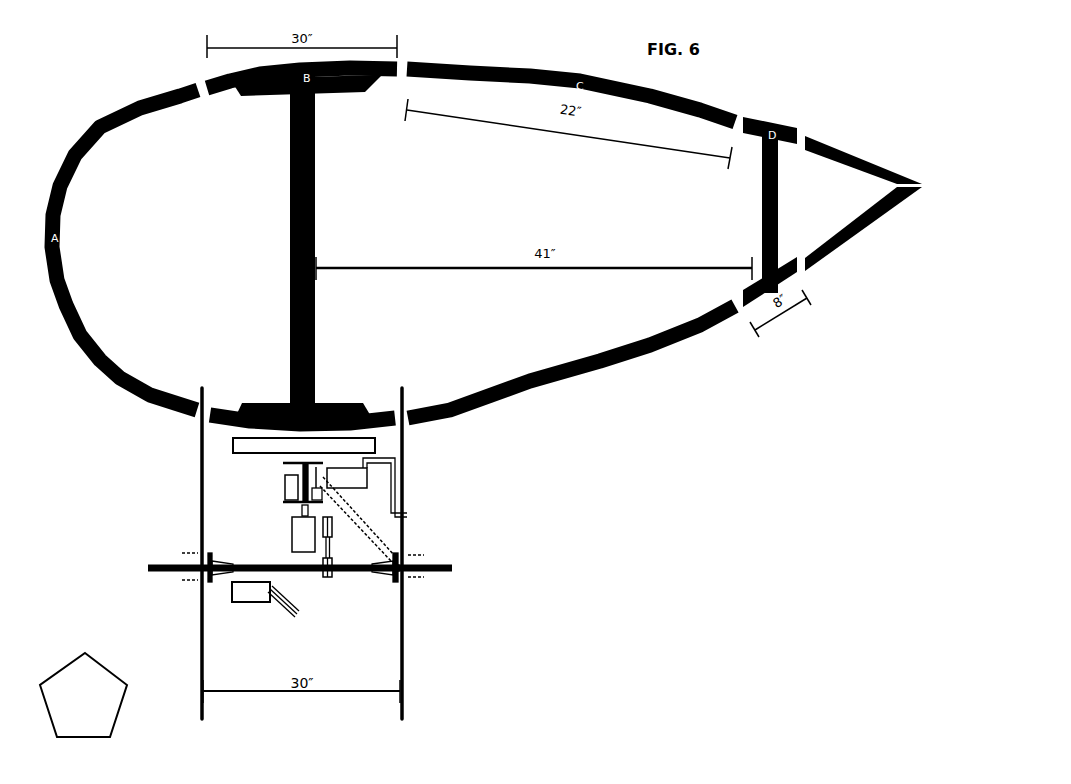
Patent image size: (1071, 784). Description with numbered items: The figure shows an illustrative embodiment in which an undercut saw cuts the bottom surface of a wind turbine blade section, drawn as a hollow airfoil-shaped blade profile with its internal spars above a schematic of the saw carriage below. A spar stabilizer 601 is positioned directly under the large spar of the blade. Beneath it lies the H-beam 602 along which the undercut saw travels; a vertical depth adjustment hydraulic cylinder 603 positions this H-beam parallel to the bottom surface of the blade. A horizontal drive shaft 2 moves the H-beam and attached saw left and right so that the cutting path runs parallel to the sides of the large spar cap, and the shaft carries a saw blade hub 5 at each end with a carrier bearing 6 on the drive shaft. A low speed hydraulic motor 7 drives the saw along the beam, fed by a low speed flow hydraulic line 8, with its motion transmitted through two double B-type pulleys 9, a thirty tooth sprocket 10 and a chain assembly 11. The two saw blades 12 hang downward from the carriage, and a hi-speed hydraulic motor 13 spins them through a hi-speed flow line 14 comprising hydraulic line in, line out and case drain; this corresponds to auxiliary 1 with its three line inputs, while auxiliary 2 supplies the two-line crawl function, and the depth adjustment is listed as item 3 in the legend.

The spar stabilizer 601 is at (225, 445).
The auxiliary 1 is at (195, 445).
The 50 ft x 8 in x 8 in H-beam 602 is at (280, 462).
The depth adjustment hydraulic cylinder 603 is at (297, 510).
The depth adjustment hydraulic cylinder 3 is at (172, 533).
The auxiliary 2 is at (142, 568).
The saw blade hub 5 is at (200, 582).
The carrier bearing 6 is at (223, 608).
The low speed hydraulic motor 7 is at (370, 478).
The low speed flow hydraulic line 8 is at (407, 510).
The double B-type pulleys 9 is at (447, 546).
The 30 tooth sprocket 10 is at (402, 578).
The chain assembly 11 is at (402, 583).
The 36 inch saw blades 12 is at (460, 566).
The hi-speed hydraulic motor 13 is at (250, 616).
The hi-speed flow hydraulic line 14 is at (300, 605).